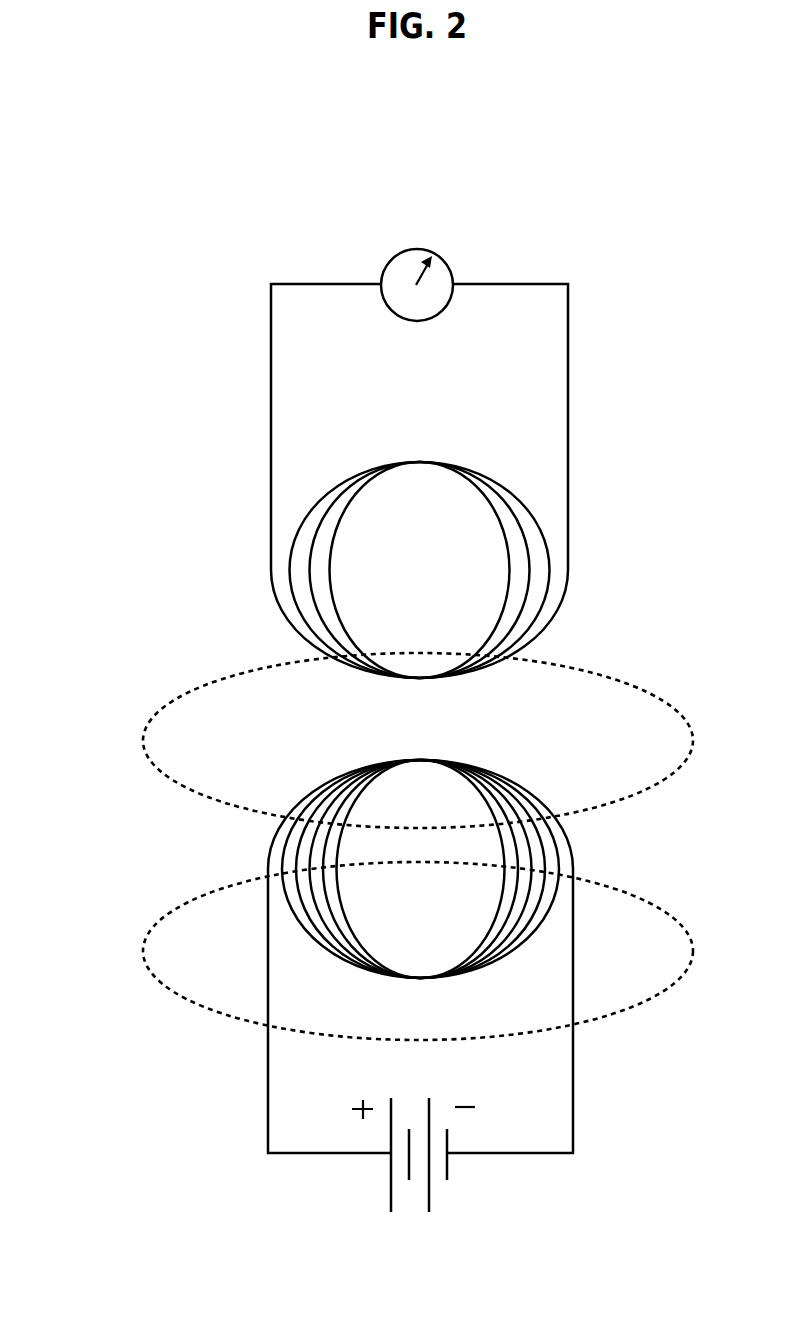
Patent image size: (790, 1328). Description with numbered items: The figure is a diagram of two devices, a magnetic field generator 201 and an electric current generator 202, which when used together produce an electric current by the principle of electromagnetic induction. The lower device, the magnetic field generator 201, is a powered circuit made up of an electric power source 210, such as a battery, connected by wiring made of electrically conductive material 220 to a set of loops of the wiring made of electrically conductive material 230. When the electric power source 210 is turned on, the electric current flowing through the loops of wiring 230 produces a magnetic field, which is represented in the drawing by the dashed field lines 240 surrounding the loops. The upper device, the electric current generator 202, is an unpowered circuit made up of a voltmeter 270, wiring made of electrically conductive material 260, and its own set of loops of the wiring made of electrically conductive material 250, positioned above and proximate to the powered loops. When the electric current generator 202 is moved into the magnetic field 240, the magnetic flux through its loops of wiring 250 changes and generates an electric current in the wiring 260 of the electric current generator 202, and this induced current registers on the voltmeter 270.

The magnetic field generator 201 is at (108, 873).
The electric current generator 202 is at (102, 411).
The electric power source 210 is at (413, 1174).
The wiring made of electrically conductive material 220 is at (421, 1011).
The set of loops of the wiring 230 is at (420, 869).
The field lines 240 is at (425, 846).
The set of loops of the wiring 250 is at (419, 570).
The wiring made of electrically conductive material 260 is at (418, 427).
The voltmeter 270 is at (417, 265).